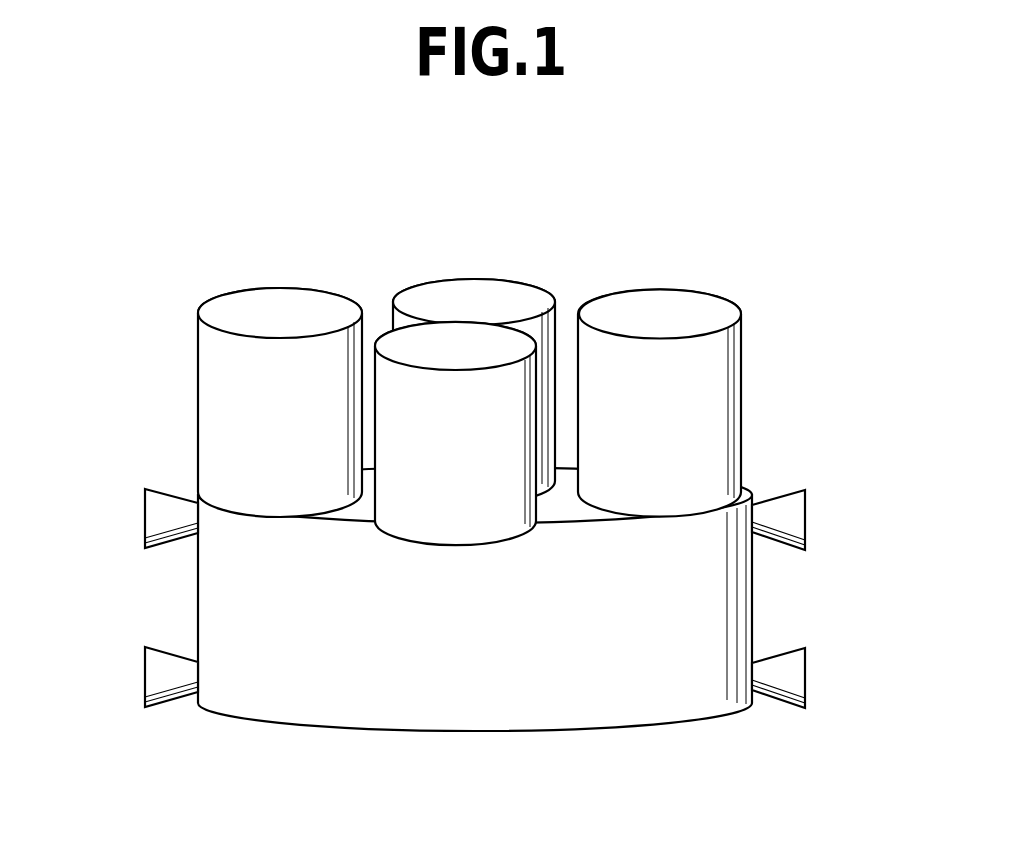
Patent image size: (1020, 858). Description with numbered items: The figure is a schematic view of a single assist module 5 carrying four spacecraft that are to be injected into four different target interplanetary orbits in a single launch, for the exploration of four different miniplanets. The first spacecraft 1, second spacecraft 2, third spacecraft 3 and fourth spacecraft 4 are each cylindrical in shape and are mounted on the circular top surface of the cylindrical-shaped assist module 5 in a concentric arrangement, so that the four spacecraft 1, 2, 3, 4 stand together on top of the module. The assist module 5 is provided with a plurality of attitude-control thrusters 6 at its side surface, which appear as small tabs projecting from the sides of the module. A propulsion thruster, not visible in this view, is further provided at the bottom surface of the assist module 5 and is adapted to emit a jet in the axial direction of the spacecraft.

The first spacecraft 1 is at (279, 308).
The second spacecraft 2 is at (430, 300).
The third spacecraft 3 is at (658, 308).
The fourth spacecraft 4 is at (488, 340).
The assist module 5 is at (533, 678).
The attitude-control thrusters 6 is at (160, 517).